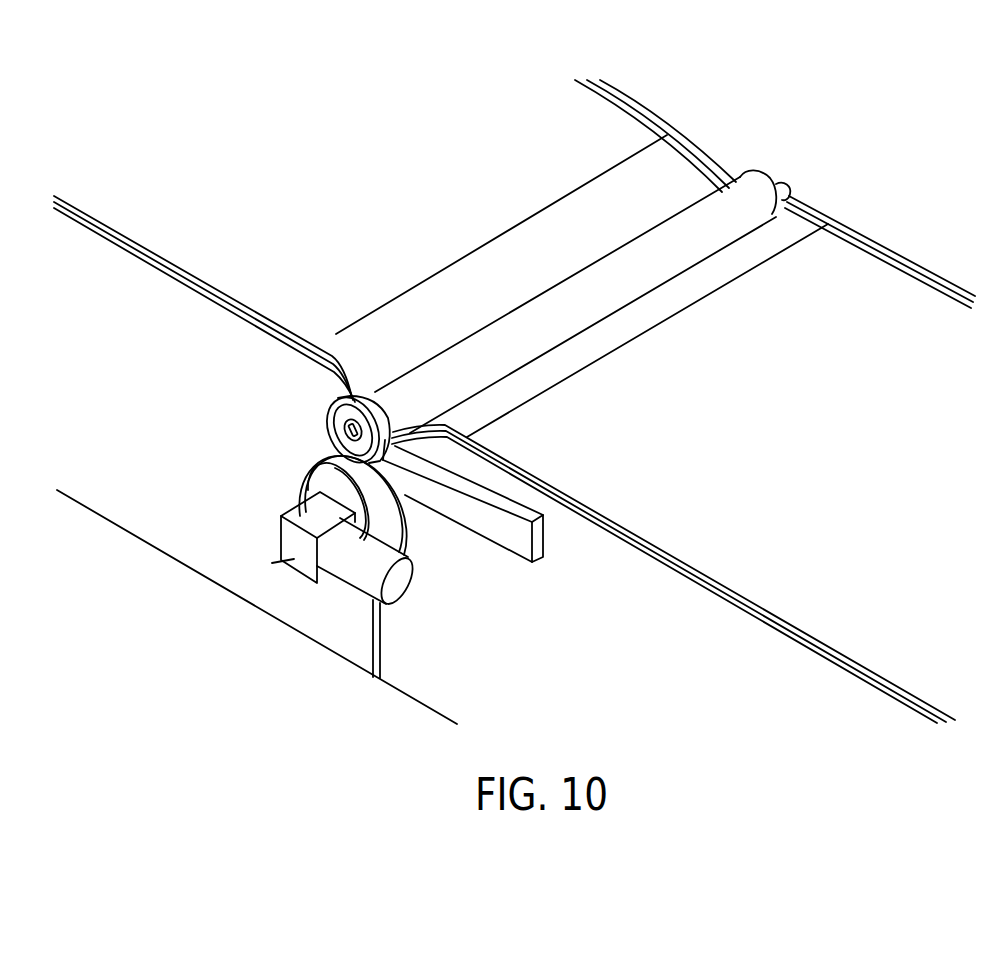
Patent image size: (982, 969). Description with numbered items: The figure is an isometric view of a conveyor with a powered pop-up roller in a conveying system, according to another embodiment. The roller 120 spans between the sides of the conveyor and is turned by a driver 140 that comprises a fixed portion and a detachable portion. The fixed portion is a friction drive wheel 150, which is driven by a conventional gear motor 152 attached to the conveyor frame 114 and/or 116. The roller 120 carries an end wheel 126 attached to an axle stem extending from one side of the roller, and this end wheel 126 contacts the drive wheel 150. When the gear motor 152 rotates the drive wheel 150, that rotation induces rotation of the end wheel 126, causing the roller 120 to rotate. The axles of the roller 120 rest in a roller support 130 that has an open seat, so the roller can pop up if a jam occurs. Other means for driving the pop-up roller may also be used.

The conveyor frame 114 is at (170, 432).
The conveyor frame 116 is at (660, 688).
The roller 120 is at (740, 203).
The end wheel 126 is at (352, 395).
The roller support 130 is at (533, 562).
The driver 140 is at (298, 455).
The friction drive wheel 150 is at (408, 540).
The gear motor 152 is at (355, 565).